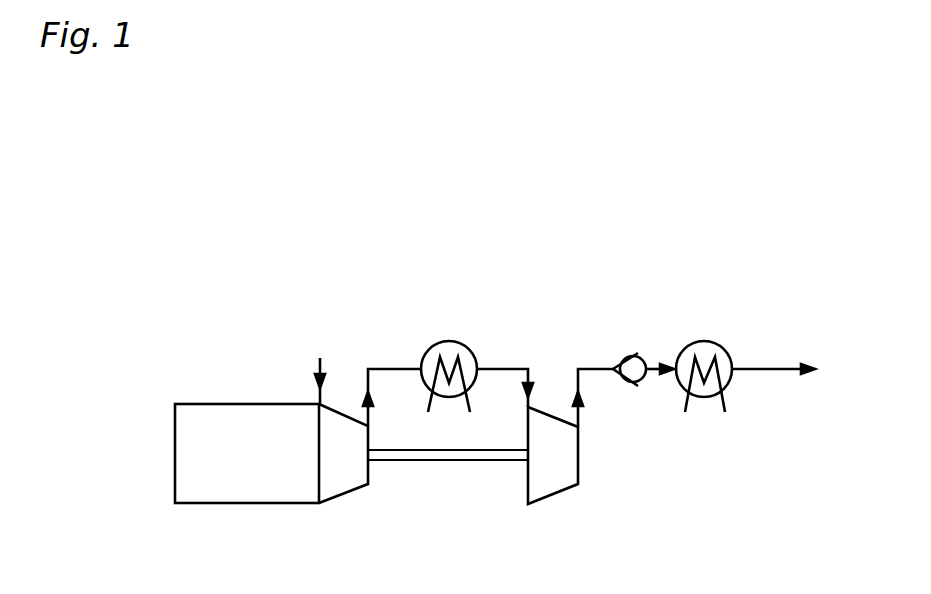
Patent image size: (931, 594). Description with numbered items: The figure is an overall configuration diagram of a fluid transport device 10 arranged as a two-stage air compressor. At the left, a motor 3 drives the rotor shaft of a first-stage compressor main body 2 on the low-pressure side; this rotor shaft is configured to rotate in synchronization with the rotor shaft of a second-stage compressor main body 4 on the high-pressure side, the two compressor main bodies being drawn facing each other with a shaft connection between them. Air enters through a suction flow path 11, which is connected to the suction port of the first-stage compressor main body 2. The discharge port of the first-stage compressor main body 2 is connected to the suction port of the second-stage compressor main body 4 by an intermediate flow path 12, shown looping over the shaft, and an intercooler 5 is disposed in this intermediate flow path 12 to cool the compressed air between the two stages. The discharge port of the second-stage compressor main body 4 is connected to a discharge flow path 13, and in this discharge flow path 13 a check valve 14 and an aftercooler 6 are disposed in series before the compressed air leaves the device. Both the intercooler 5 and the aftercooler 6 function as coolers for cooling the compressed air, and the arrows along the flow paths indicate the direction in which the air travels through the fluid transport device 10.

The fluid transport device 10 is at (772, 243).
The motor 3 is at (247, 404).
The first-stage compressor main body 2 is at (345, 413).
The suction flow path 11 is at (317, 378).
The intermediate flow path 12 is at (500, 369).
The intercooler 5 is at (450, 341).
The second-stage compressor main body 4 is at (553, 417).
The discharge flow path 13 is at (590, 369).
The check valve 14 is at (623, 352).
The aftercooler 6 is at (708, 341).